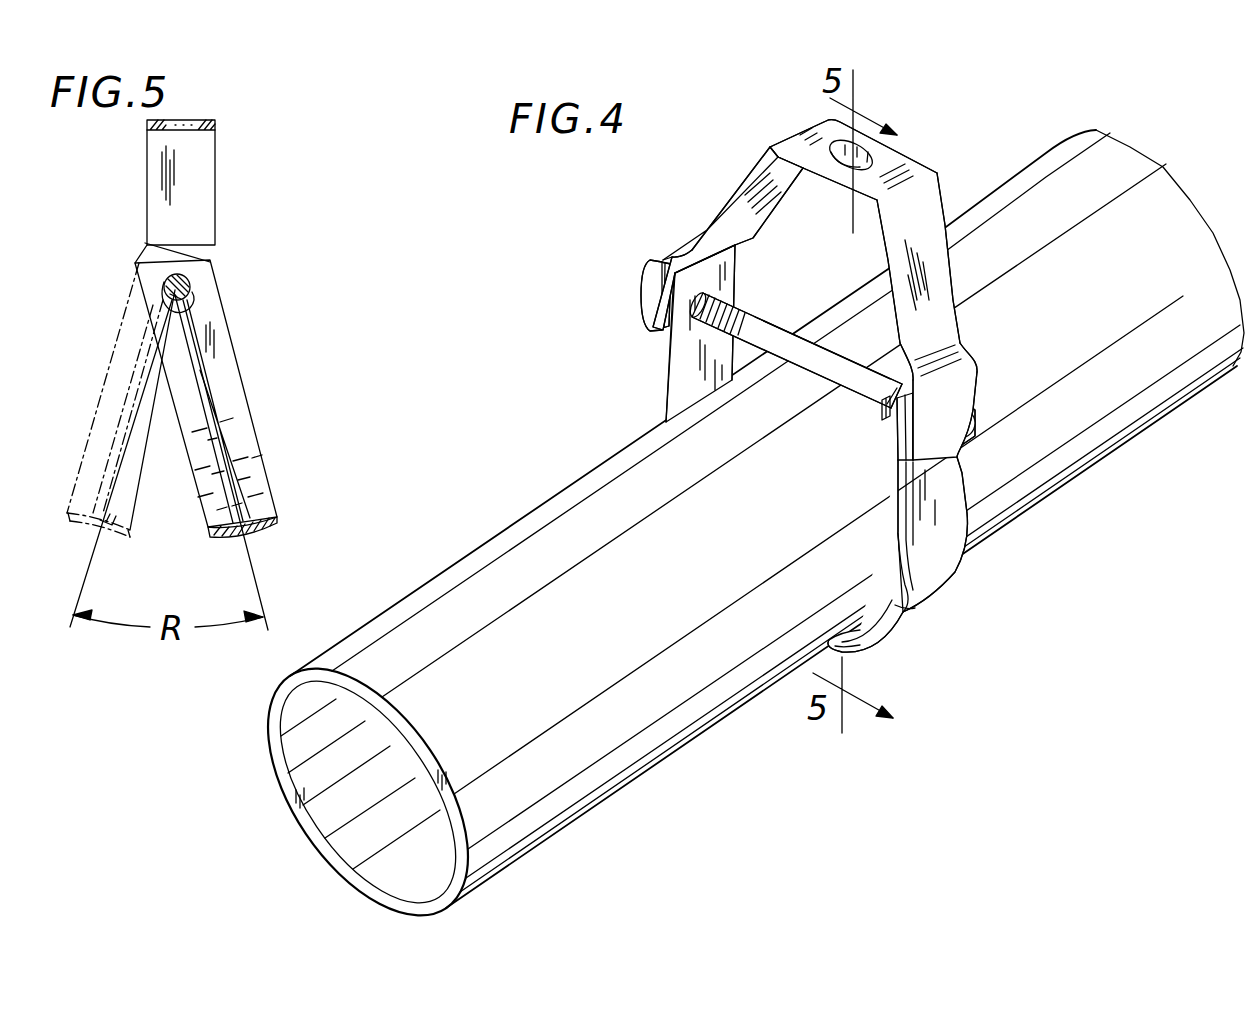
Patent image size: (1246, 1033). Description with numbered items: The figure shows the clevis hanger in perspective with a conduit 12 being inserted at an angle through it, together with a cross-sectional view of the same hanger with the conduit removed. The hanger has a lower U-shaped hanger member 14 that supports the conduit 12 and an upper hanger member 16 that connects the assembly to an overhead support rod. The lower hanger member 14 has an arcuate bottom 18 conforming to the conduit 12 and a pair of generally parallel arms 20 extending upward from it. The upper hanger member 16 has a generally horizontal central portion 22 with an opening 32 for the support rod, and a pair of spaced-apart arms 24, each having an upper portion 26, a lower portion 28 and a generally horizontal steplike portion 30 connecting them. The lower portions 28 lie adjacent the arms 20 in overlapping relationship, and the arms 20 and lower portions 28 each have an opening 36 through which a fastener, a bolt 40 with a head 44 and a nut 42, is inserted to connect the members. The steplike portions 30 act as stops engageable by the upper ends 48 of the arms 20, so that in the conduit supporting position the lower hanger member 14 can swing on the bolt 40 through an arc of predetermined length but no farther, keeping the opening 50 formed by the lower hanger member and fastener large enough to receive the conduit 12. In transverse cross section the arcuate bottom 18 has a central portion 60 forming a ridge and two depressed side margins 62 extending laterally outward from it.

In FIG. 4, the conduit 12 is at (1086, 450).
In FIG. 4, the lower U-shaped hanger member 14 is at (950, 572).
In FIG. 4, the upper hanger member 16 is at (797, 276).
In FIG. 4, the arcuate bottom 18 is at (868, 643).
In FIG. 4, the arms 20 is at (692, 358).
In FIG. 5, the arms 20 is at (153, 280).
In FIG. 4, the central portion 22 is at (818, 128).
In FIG. 5, the arms 24 is at (198, 172).
In FIG. 4, the upper portion 26 is at (745, 222).
In FIG. 4, the lower portion 28 is at (653, 327).
In FIG. 4, the steplike portion 30 is at (687, 252).
In FIG. 4, the opening 32 is at (887, 167).
In FIG. 5, the opening 32 is at (175, 120).
In FIG. 5, the opening 36 is at (192, 304).
In FIG. 4, the bolt 40 is at (770, 322).
In FIG. 5, the bolt 40 is at (190, 278).
In FIG. 4, the nut 42 is at (641, 298).
In FIG. 4, the head 44 is at (960, 428).
In FIG. 4, the upper ends 48 is at (647, 280).
In FIG. 5, the upper ends 48 is at (163, 246).
In FIG. 4, the opening 50 is at (897, 612).
In FIG. 5, the central portion 60 is at (255, 515).
In FIG. 5, the side margins 62 is at (75, 512).